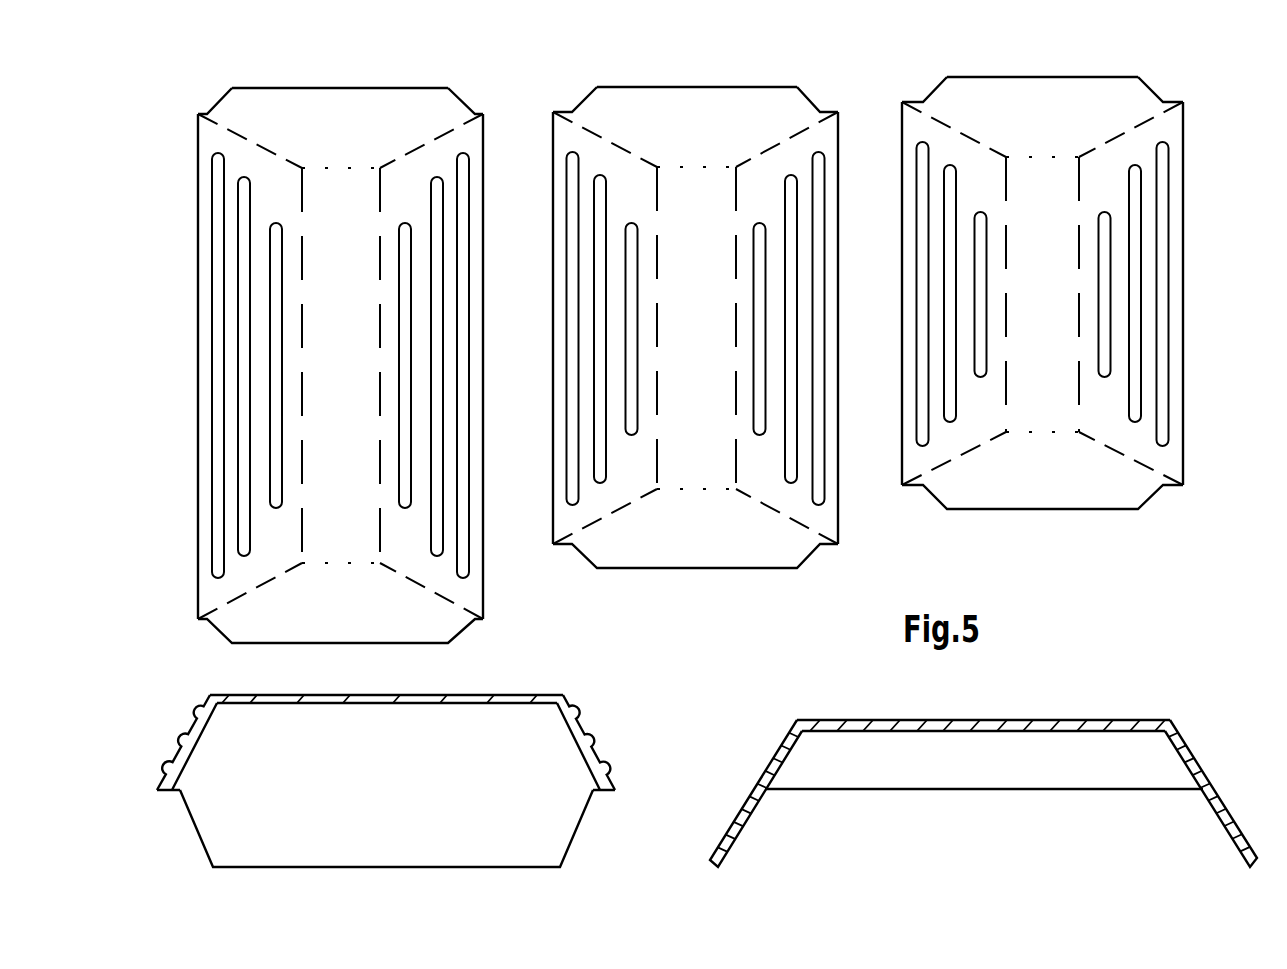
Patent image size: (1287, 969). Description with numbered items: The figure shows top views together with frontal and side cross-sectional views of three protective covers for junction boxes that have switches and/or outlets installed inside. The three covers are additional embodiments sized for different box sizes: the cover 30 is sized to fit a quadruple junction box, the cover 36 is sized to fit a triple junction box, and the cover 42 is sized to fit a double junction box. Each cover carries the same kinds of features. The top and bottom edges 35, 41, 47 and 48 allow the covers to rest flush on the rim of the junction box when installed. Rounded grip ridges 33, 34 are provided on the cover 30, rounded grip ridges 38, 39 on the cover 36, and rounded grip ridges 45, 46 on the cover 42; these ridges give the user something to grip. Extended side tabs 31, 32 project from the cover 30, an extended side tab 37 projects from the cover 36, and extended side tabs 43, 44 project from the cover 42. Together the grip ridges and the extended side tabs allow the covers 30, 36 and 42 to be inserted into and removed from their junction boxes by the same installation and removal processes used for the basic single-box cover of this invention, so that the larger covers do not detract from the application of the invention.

The cover 30 is at (476, 364).
The extended side tab 31 is at (368, 88).
The extended side tab 32 is at (323, 648).
The rounded grip ridge 33 is at (197, 463).
The rounded grip ridge 34 is at (463, 428).
The top and bottom edge 35 is at (487, 128).
The cover 36 is at (197, 183).
The extended side tab 37 is at (793, 570).
The rounded grip ridge 38 is at (573, 338).
The rounded grip ridge 39 is at (820, 393).
The top and bottom edge 41 is at (553, 189).
The cover 42 is at (990, 77).
The extended side tab 43 is at (1127, 77).
The extended side tab 44 is at (1088, 512).
The rounded grip ridge 45 is at (923, 387).
The rounded grip ridge 46 is at (1163, 373).
The top and bottom edge 47 is at (901, 234).
The top and bottom edge 48 is at (1185, 257).